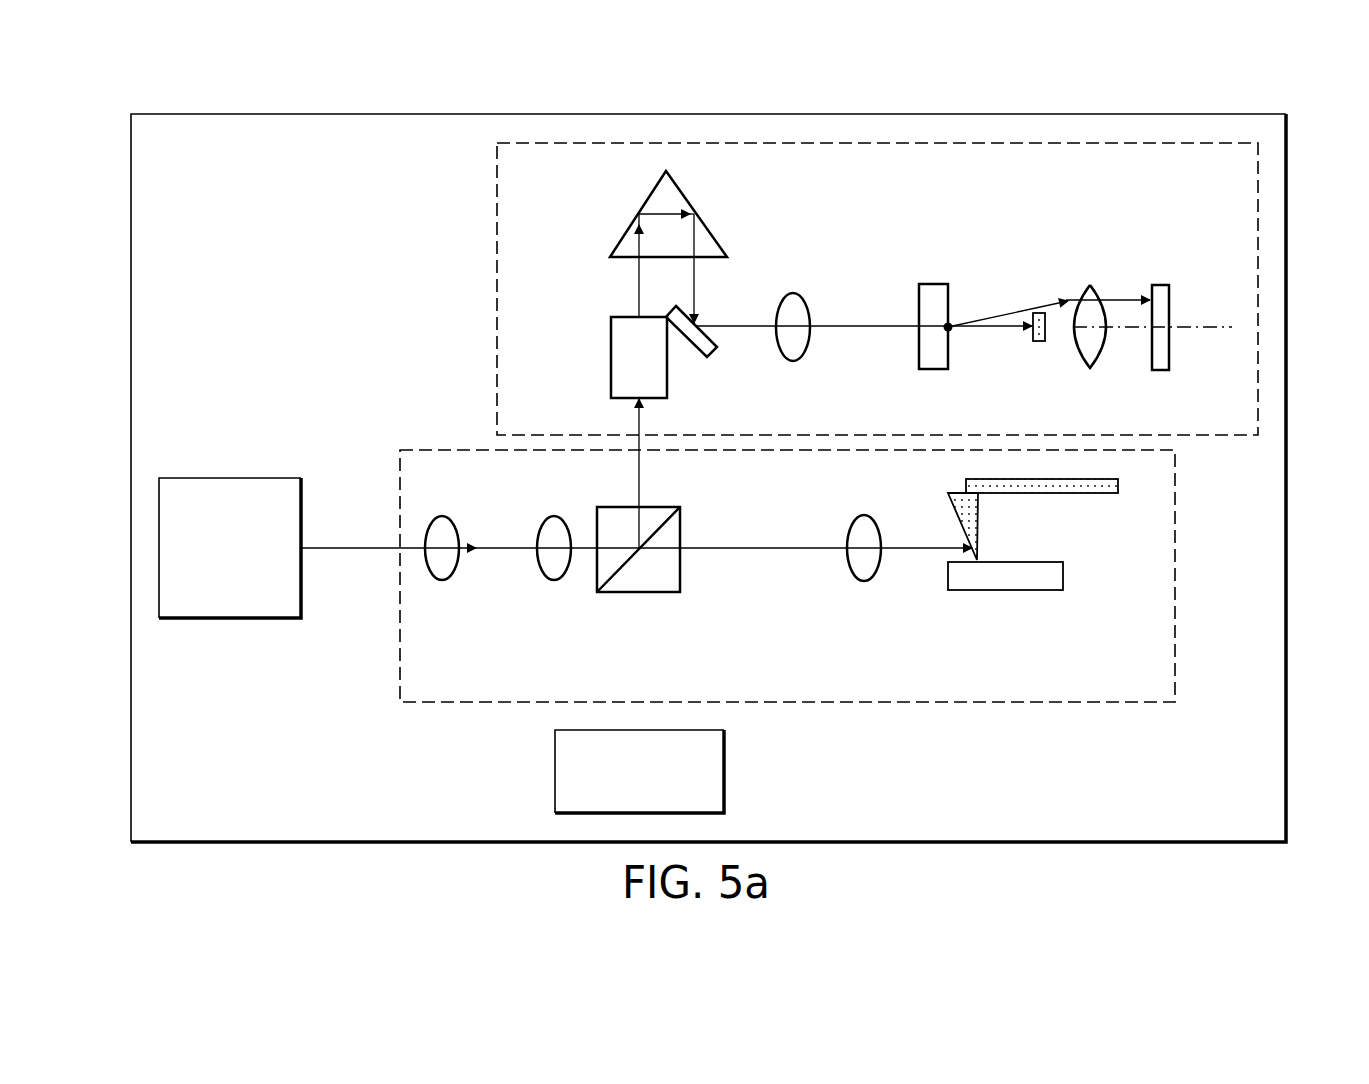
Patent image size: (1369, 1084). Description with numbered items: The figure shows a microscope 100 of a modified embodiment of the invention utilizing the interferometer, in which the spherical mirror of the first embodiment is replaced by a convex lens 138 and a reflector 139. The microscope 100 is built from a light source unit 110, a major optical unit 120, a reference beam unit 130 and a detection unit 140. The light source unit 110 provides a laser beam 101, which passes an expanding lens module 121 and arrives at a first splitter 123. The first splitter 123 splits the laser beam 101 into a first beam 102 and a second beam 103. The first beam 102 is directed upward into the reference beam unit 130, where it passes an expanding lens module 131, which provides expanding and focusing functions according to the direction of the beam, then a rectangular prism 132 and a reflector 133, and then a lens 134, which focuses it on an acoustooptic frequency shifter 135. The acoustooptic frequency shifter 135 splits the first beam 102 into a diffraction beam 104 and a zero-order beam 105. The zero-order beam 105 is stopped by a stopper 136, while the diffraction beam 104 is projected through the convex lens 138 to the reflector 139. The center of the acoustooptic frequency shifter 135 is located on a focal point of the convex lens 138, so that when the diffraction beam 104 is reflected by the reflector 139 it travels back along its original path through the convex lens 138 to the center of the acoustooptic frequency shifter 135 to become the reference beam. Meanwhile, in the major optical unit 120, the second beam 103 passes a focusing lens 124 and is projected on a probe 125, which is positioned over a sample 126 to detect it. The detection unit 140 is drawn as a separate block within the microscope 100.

The microscope 100 is at (52, 115).
The light source unit 110 is at (207, 563).
The major optical unit 120 is at (1175, 558).
The reference beam unit 130 is at (1258, 283).
The detection unit 140 is at (617, 787).
The laser beam 101 is at (348, 545).
The first beam 102 is at (640, 477).
The second beam 103 is at (766, 550).
The diffraction beam 104 is at (1013, 311).
The zero-order beam 105 is at (990, 331).
The expanding lens module 121 is at (442, 580).
The first splitter 123 is at (681, 520).
The focusing lens 124 is at (864, 583).
The probe 125 is at (972, 527).
The sample 126 is at (1050, 575).
The expanding lens module 131 is at (611, 357).
The rectangular prism 132 is at (650, 193).
The reflector 133 is at (707, 358).
The lens 134 is at (793, 293).
The acoustooptic frequency shifter 135 is at (933, 284).
The stopper 136 is at (1038, 342).
The convex lens 138 is at (1090, 285).
The reflector 139 is at (1160, 285).